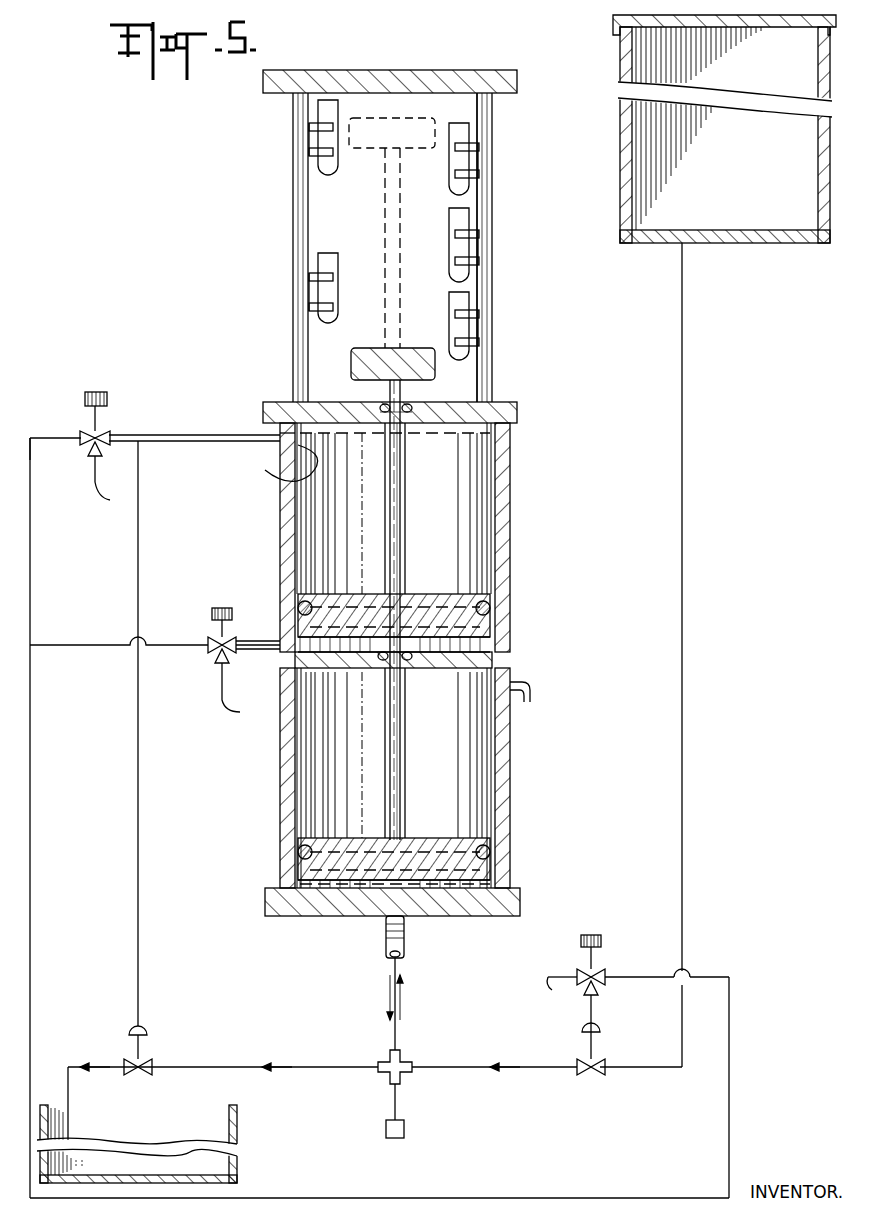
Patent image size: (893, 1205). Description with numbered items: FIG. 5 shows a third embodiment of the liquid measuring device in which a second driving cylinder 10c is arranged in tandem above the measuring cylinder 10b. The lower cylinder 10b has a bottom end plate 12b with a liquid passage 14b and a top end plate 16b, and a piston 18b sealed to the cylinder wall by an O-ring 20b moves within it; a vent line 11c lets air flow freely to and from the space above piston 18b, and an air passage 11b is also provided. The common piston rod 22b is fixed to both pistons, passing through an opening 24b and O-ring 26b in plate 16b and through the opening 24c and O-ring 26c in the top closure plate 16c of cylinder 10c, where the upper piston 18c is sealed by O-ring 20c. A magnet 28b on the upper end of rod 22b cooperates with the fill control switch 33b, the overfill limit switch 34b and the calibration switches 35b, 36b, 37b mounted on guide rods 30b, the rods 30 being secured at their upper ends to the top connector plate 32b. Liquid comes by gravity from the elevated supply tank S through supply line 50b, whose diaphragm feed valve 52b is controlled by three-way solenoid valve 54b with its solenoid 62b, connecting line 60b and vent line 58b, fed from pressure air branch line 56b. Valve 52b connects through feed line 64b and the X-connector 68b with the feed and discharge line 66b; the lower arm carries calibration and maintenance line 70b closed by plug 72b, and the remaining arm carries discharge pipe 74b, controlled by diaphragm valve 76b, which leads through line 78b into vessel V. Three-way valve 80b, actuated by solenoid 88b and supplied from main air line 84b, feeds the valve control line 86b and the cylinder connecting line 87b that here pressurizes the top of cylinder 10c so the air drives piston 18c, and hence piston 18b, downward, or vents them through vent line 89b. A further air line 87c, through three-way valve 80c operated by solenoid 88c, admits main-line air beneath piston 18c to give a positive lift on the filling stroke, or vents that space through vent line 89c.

The top connector plate 32b is at (517, 90).
The guide rod 30b is at (292, 352).
The guide rods 30 is at (493, 200).
The overfill limit control switch 34b is at (318, 143).
The calibration control switch 35b is at (318, 295).
The calibration control switch 36b is at (469, 240).
The calibration control switch 37b is at (469, 160).
The fill control switch 33b is at (469, 350).
The magnet 28b is at (420, 378).
The common piston rod 22b is at (401, 755).
The top closure plate 16c is at (455, 430).
The O-ring 26c is at (380, 408).
The second driving cylinder 10c is at (510, 522).
The opening 24c is at (393, 430).
The piston 18c is at (438, 600).
The O-ring 20c is at (490, 606).
The top end plate 16b is at (455, 670).
The O-ring 26b is at (410, 668).
The cylinder 10b is at (510, 790).
The opening 24b is at (385, 672).
The vent line 11c is at (532, 692).
The piston 18b is at (442, 845).
The O-ring 20b is at (490, 850).
The bottom end plate 12b is at (478, 916).
The liquid passage 14b is at (405, 942).
The liquid feed and discharge line 66b is at (398, 965).
The X-connector 68b is at (405, 1058).
The calibration and maintenance line 70b is at (396, 1108).
The plug 72b is at (404, 1130).
The liquid discharge pipe 74b is at (255, 1065).
The discharge valve 76b is at (150, 1062).
The diaphragm valve control line 86b is at (140, 525).
The line 78b is at (82, 1072).
The vessel V is at (237, 1128).
The pressure air branch line 56b is at (32, 555).
The three-way valve 80c is at (208, 652).
The solenoid 88c is at (224, 608).
The air line 87c is at (268, 648).
The vent line 89c is at (222, 710).
The cylinder connecting line 87b is at (170, 441).
The three-way valve 80b is at (110, 435).
The solenoid 88b is at (100, 392).
The main air pressure line 84b is at (30, 440).
The vent line 89b is at (95, 500).
The air passage 11b is at (300, 465).
The supply cylinder S is at (832, 158).
The liquid supply line 50b is at (684, 550).
The vent line 58b is at (548, 977).
The three-way solenoid feed control valve 54b is at (605, 975).
The solenoid 62b is at (596, 935).
The connecting line 60b is at (593, 1010).
The feed valve 52b is at (591, 1075).
The liquid feed line 64b is at (480, 1065).